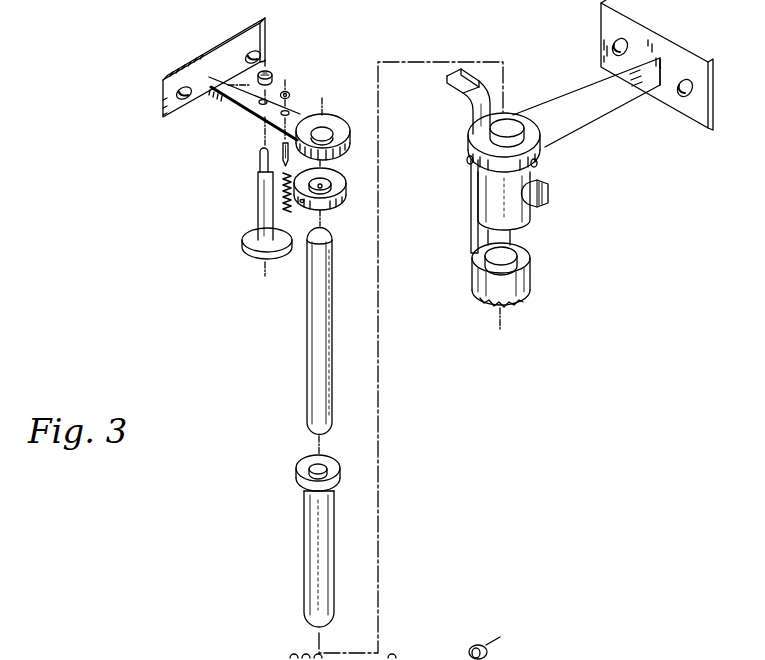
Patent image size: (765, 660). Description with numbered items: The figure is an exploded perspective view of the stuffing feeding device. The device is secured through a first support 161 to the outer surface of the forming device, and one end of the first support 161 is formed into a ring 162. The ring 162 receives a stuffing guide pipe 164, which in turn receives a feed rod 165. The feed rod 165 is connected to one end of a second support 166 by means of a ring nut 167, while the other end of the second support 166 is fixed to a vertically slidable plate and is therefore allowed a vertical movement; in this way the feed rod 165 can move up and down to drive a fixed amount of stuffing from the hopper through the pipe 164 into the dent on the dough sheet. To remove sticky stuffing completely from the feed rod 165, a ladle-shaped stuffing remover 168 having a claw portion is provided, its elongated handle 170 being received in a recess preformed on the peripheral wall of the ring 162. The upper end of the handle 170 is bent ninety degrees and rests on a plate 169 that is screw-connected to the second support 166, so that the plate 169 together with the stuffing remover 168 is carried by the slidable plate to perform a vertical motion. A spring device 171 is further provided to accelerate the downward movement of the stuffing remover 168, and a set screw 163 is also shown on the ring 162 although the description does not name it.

The first support 161 is at (635, 88).
The ring 162 is at (545, 150).
The set screw 163 is at (552, 193).
The stuffing guide pipe 164 is at (310, 567).
The feed rod 165 is at (320, 328).
The second support 166 is at (243, 103).
The ring nut 167 is at (345, 182).
The ladle-shaped stuffing remover 168 is at (530, 293).
The plate 169 is at (251, 243).
The handle 170 is at (473, 80).
The spring device 171 is at (290, 196).